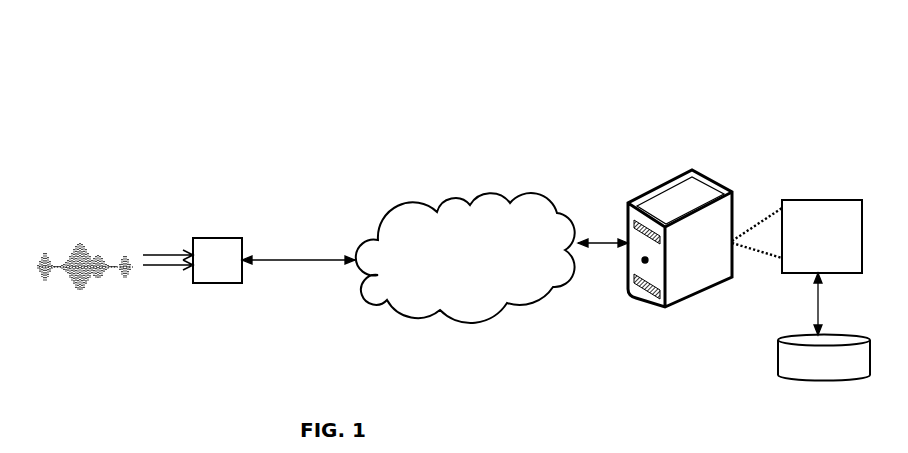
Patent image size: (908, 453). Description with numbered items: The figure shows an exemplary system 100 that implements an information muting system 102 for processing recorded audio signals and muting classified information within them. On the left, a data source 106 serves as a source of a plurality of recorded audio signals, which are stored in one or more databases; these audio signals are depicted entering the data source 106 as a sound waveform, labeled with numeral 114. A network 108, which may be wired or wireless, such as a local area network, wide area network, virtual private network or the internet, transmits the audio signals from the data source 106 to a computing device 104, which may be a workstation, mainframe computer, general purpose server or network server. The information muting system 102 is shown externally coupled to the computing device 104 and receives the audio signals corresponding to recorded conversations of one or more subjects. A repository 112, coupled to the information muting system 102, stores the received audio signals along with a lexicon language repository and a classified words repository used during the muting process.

The system 100 is at (523, 57).
The information muting system 102 is at (803, 200).
The computing device 104 is at (703, 177).
The data source 106 is at (203, 238).
The network 108 is at (453, 198).
The repository 112 is at (778, 358).
The sound / audio signal 114 is at (122, 212).